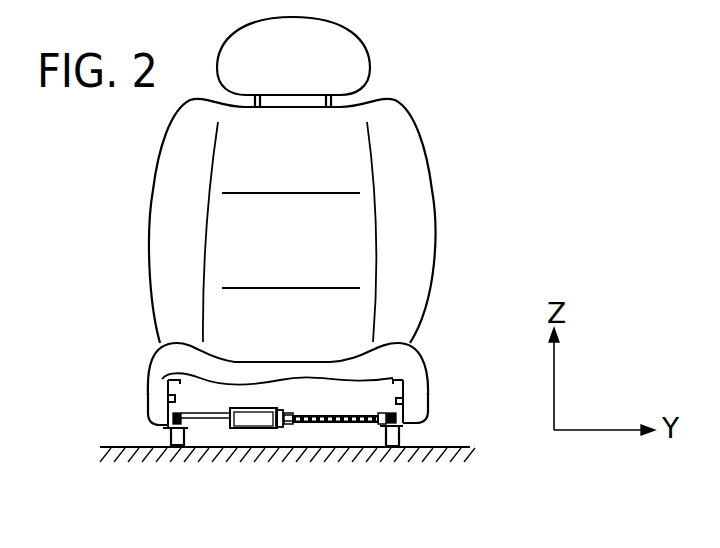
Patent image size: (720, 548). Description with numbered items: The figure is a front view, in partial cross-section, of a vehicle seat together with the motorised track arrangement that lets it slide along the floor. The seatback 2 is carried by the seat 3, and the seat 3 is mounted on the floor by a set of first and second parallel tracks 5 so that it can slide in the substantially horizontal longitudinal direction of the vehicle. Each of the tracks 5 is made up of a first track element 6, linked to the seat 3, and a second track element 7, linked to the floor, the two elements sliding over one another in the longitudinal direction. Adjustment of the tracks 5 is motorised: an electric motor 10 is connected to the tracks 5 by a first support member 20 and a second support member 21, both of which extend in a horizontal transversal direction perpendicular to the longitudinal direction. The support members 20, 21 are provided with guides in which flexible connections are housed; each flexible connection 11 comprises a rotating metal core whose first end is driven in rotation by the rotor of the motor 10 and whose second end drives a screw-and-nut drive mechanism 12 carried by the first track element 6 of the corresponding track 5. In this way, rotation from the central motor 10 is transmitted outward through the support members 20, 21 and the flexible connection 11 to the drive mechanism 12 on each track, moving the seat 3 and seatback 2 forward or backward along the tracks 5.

The seatback 2 is at (178, 170).
The seat 3 is at (158, 362).
The tracks 5 is at (160, 437).
The first track element 6 is at (163, 433).
The second track element 7 is at (403, 440).
The electric motor 10 is at (248, 422).
The flexible connection 11 is at (358, 422).
The drive mechanism 12 is at (166, 396).
The first support member 20 is at (210, 418).
The second support member 21 is at (330, 422).